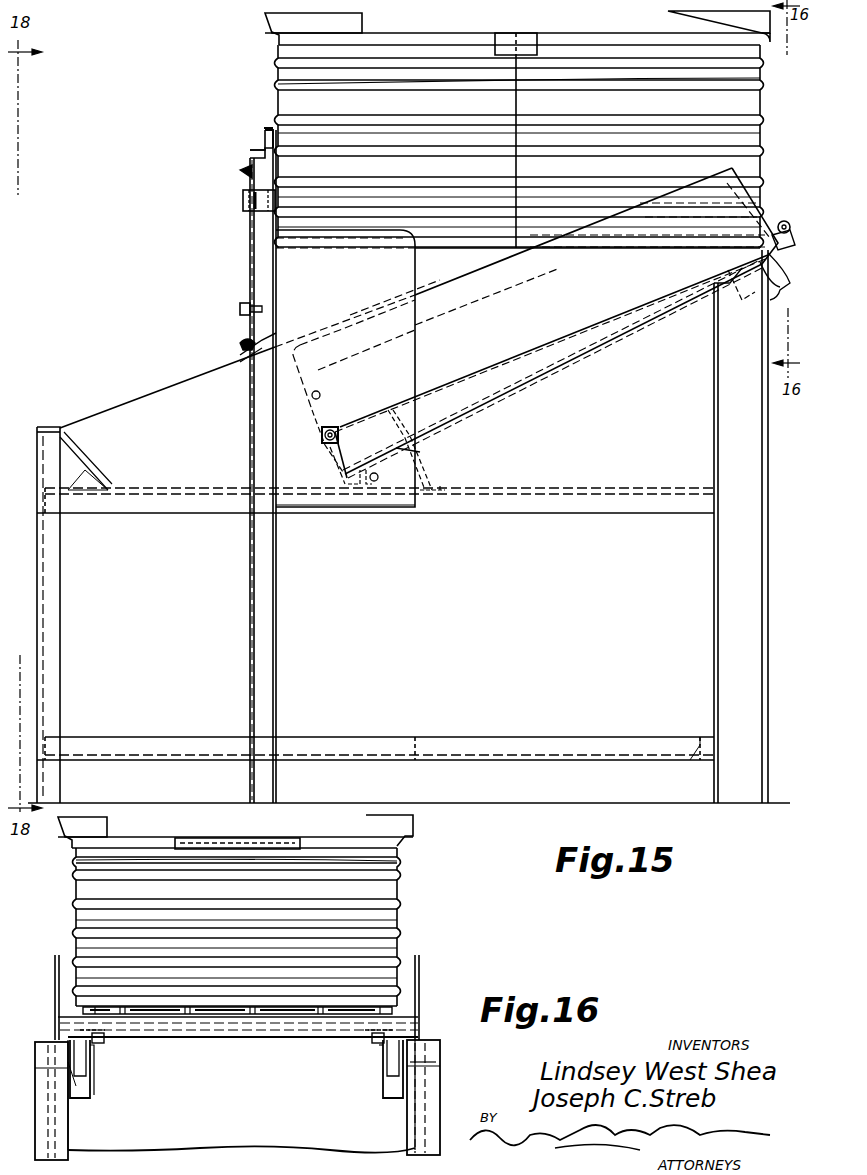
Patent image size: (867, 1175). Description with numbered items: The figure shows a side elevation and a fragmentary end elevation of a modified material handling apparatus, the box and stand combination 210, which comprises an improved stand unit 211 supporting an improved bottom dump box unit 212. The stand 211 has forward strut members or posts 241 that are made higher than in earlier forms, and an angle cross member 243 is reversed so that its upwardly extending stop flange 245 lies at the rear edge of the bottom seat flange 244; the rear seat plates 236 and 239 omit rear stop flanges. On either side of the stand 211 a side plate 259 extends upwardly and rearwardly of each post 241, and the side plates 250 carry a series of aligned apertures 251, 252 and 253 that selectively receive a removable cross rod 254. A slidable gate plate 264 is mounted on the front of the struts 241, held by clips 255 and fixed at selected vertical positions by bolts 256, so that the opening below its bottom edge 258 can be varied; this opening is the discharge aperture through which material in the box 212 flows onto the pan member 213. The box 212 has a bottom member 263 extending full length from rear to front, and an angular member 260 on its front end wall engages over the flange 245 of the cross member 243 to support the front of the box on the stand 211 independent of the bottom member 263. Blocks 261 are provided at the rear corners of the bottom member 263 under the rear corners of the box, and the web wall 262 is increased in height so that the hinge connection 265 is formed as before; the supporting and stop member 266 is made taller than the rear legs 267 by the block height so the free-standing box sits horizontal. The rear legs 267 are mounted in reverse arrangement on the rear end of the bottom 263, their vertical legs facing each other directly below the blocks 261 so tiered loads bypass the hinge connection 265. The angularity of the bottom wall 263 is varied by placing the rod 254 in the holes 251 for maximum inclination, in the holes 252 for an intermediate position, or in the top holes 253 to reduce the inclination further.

In FIG. 15, the box and stand combination 210 is at (240, 245).
In FIG. 15, the stand unit 211 is at (540, 760).
In FIG. 16, the stand unit 211 is at (438, 1082).
In FIG. 15, the bottom dump box unit 212 is at (273, 100).
In FIG. 15, the pan member 213 is at (70, 445).
In FIG. 15, the rear seat plate 236 is at (714, 300).
In FIG. 16, the rear seat plate 236 is at (58, 1045).
In FIG. 16, the rear seat plate 239 is at (422, 1047).
In FIG. 15, the forward strut member 241 is at (258, 358).
In FIG. 15, the angle cross member 243 is at (253, 150).
In FIG. 15, the bottom seat flange 244 is at (245, 163).
In FIG. 15, the stop flange 245 is at (262, 142).
In FIG. 15, the side plate 250 is at (403, 276).
In FIG. 15, the aperture 251 is at (378, 480).
In FIG. 15, the aperture 252 is at (337, 425).
In FIG. 15, the aperture 253 is at (318, 390).
In FIG. 15, the removable cross rod 254 is at (325, 445).
In FIG. 15, the clip 255 is at (243, 201).
In FIG. 15, the bolt 256 is at (240, 312).
In FIG. 15, the bottom edge 258 is at (263, 348).
In FIG. 15, the side plate 259 is at (118, 415).
In FIG. 15, the angular member 260 is at (268, 133).
In FIG. 15, the block 261 is at (782, 230).
In FIG. 16, the web wall 262 is at (200, 1030).
In FIG. 15, the bottom member 263 is at (520, 360).
In FIG. 16, the bottom member 263 is at (266, 1128).
In FIG. 15, the gate plate 264 is at (250, 280).
In FIG. 16, the hinge connection 265 is at (280, 1025).
In FIG. 15, the supporting and stop member 266 is at (420, 450).
In FIG. 15, the rear leg 267 is at (775, 290).